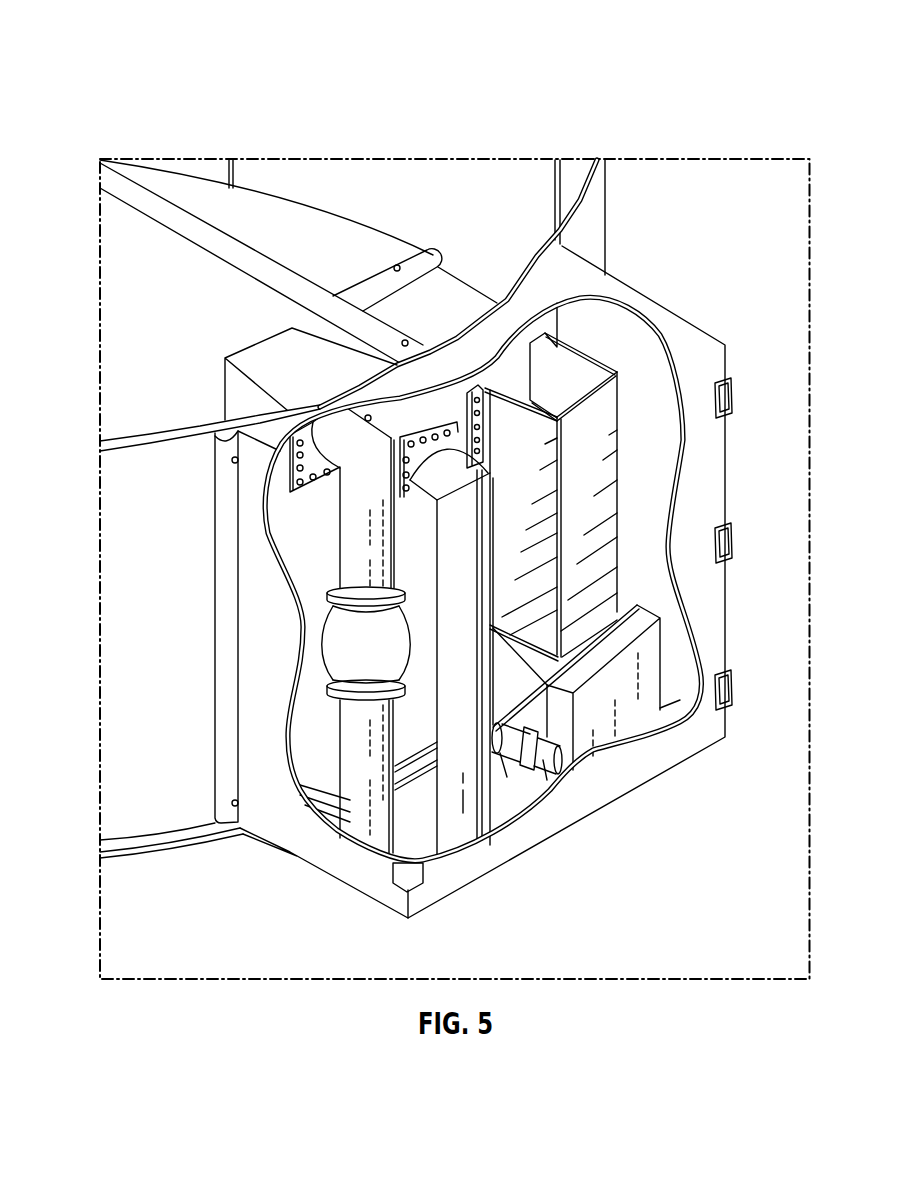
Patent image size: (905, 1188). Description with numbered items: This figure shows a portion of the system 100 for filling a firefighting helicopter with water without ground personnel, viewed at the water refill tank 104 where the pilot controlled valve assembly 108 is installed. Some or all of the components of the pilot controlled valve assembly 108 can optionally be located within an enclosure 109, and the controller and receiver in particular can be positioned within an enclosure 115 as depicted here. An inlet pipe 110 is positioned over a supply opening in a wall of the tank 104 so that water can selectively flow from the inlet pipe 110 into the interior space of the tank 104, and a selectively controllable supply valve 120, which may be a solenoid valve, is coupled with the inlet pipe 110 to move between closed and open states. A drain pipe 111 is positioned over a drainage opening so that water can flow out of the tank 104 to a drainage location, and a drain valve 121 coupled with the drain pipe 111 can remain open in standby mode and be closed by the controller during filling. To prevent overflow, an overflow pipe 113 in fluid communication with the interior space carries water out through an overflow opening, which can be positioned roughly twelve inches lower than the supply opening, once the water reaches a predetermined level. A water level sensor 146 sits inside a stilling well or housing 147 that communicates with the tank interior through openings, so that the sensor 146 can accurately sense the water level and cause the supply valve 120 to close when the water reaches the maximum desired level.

The system 100 is at (117, 71).
The water refill tank 104 is at (587, 237).
The pilot controlled valve assembly 108 is at (702, 764).
The enclosure 109 is at (670, 328).
The inlet pipe 110 is at (327, 823).
The drain pipe 111 is at (577, 780).
The overflow pipe 113 is at (457, 823).
The enclosure 115 is at (645, 651).
The supply valve 120 is at (335, 643).
The drain valve 121 is at (507, 757).
The water level sensor 146 is at (590, 445).
The stilling well or housing 147 is at (605, 578).